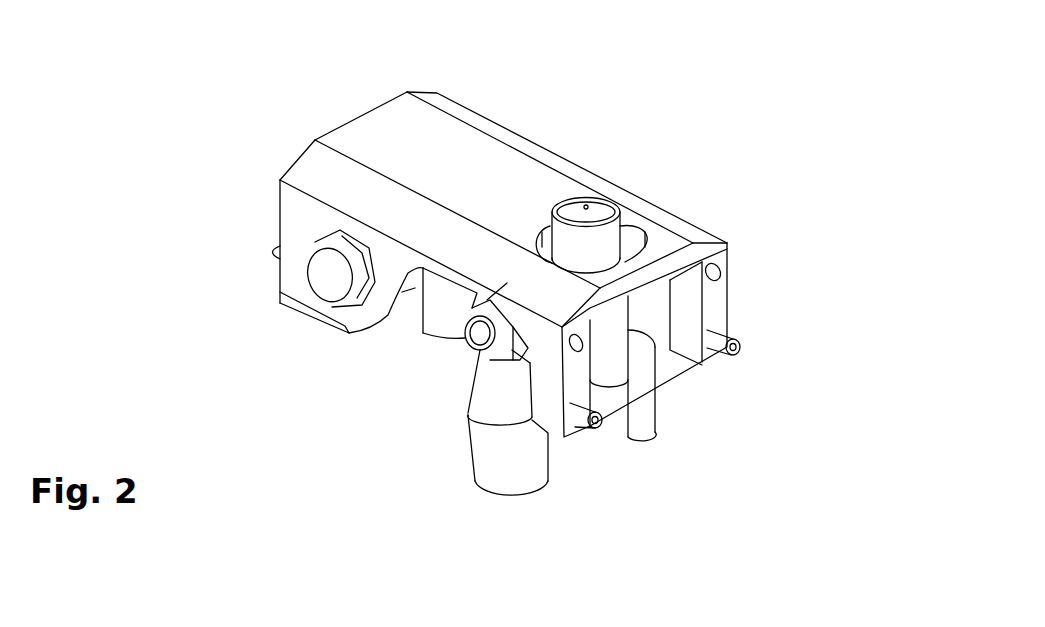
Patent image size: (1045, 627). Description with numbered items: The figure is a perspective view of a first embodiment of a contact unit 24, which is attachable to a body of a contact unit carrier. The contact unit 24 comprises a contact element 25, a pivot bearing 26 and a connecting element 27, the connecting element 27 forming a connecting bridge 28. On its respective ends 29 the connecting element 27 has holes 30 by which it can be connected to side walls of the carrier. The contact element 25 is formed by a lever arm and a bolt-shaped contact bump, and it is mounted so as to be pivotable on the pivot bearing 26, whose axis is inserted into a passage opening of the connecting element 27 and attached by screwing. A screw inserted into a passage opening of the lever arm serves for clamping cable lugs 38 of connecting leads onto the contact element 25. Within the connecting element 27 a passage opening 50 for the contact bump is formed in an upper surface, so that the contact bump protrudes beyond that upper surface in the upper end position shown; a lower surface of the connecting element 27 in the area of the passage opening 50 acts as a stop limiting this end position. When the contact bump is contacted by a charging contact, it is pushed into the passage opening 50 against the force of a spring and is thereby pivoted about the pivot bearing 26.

The contact unit 24 is at (798, 238).
The contact element 25 is at (445, 306).
The pivot bearing 26 is at (330, 275).
The connecting element 27 is at (436, 143).
The connecting bridge 28 is at (466, 154).
The ends 29 is at (289, 158).
The holes 30 is at (730, 280).
The cable lugs 38 is at (507, 465).
The passage opening 50 is at (638, 242).